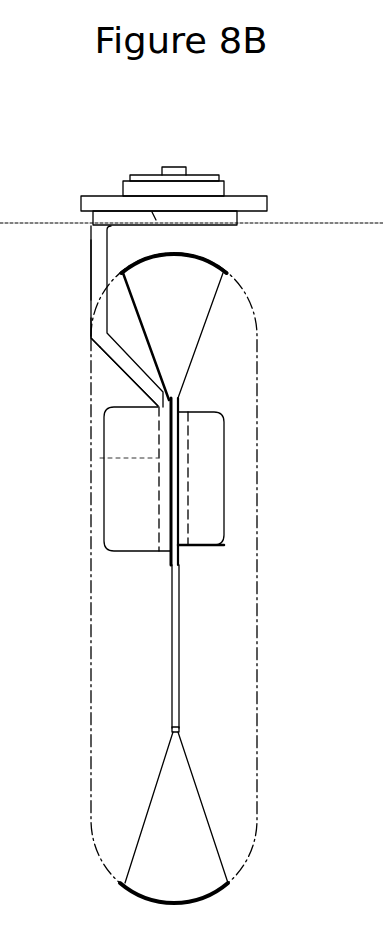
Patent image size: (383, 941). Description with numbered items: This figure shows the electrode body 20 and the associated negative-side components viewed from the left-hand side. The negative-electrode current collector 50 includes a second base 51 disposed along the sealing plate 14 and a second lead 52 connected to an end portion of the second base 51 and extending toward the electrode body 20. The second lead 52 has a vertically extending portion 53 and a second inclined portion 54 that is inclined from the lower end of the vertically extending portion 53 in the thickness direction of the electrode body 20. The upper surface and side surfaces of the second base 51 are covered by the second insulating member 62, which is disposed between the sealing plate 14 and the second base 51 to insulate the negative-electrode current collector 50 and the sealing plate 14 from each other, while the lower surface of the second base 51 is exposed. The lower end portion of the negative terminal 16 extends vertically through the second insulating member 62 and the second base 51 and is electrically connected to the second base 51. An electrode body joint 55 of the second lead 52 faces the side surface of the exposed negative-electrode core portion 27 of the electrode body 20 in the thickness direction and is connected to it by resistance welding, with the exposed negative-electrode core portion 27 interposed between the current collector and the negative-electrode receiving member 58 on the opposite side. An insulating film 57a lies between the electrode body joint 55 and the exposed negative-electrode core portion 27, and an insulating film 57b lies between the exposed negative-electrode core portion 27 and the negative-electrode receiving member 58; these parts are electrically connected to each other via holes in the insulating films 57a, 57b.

The sealing plate 14 is at (247, 196).
The negative terminal 16 is at (172, 167).
The second base 51 is at (188, 218).
The second insulating member 62 is at (155, 218).
The negative-electrode current collector 50 is at (90, 293).
The vertically extending portion 53 is at (91, 258).
The second lead 52 is at (91, 323).
The second inclined portion 54 is at (120, 378).
The negative-electrode receiving member 58 is at (212, 490).
The insulating film 57a is at (168, 505).
The insulating film 57b is at (179, 435).
The electrode body joint 55 is at (158, 458).
The electrode body 20 is at (164, 638).
The exposed negative-electrode core portion 27 is at (171, 593).